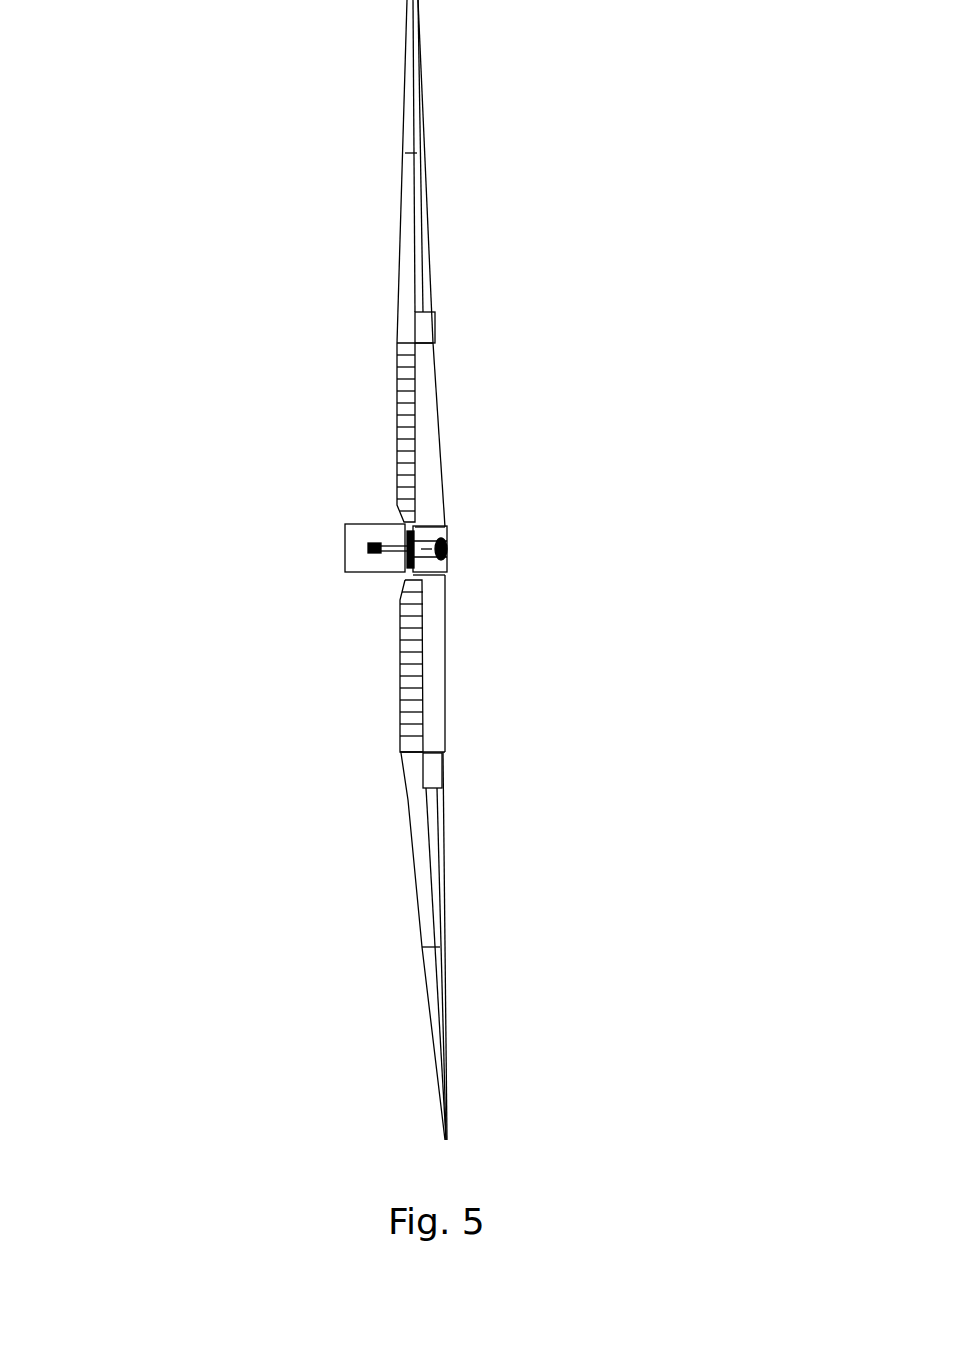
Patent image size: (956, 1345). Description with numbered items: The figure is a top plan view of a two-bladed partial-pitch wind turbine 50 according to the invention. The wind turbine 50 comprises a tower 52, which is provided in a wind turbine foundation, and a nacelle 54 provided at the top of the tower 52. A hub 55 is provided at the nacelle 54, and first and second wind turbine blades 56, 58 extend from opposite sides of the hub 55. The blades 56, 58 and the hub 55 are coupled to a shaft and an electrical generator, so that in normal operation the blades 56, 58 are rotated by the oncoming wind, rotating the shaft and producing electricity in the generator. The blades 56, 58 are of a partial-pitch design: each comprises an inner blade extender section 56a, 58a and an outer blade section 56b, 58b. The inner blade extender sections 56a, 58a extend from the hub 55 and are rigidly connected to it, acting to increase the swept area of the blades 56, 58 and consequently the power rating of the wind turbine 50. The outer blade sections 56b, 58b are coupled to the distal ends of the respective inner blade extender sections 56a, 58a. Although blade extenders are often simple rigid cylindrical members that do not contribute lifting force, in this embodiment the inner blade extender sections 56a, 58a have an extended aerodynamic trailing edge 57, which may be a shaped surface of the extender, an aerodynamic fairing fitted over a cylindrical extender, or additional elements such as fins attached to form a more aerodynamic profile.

The two-bladed partial-pitch wind turbine 50 is at (162, 276).
The tower 52 is at (368, 548).
The nacelle 54 is at (357, 523).
The hub 55 is at (448, 545).
The first wind turbine blade 56 is at (590, 221).
The inner blade extender section 56a is at (428, 420).
The outer blade section 56b is at (417, 152).
The extended aerodynamic trailing edge 57 is at (403, 410).
The second wind turbine blade 58 is at (570, 875).
The inner blade extender section 58a is at (428, 652).
The outer blade section 58b is at (440, 945).